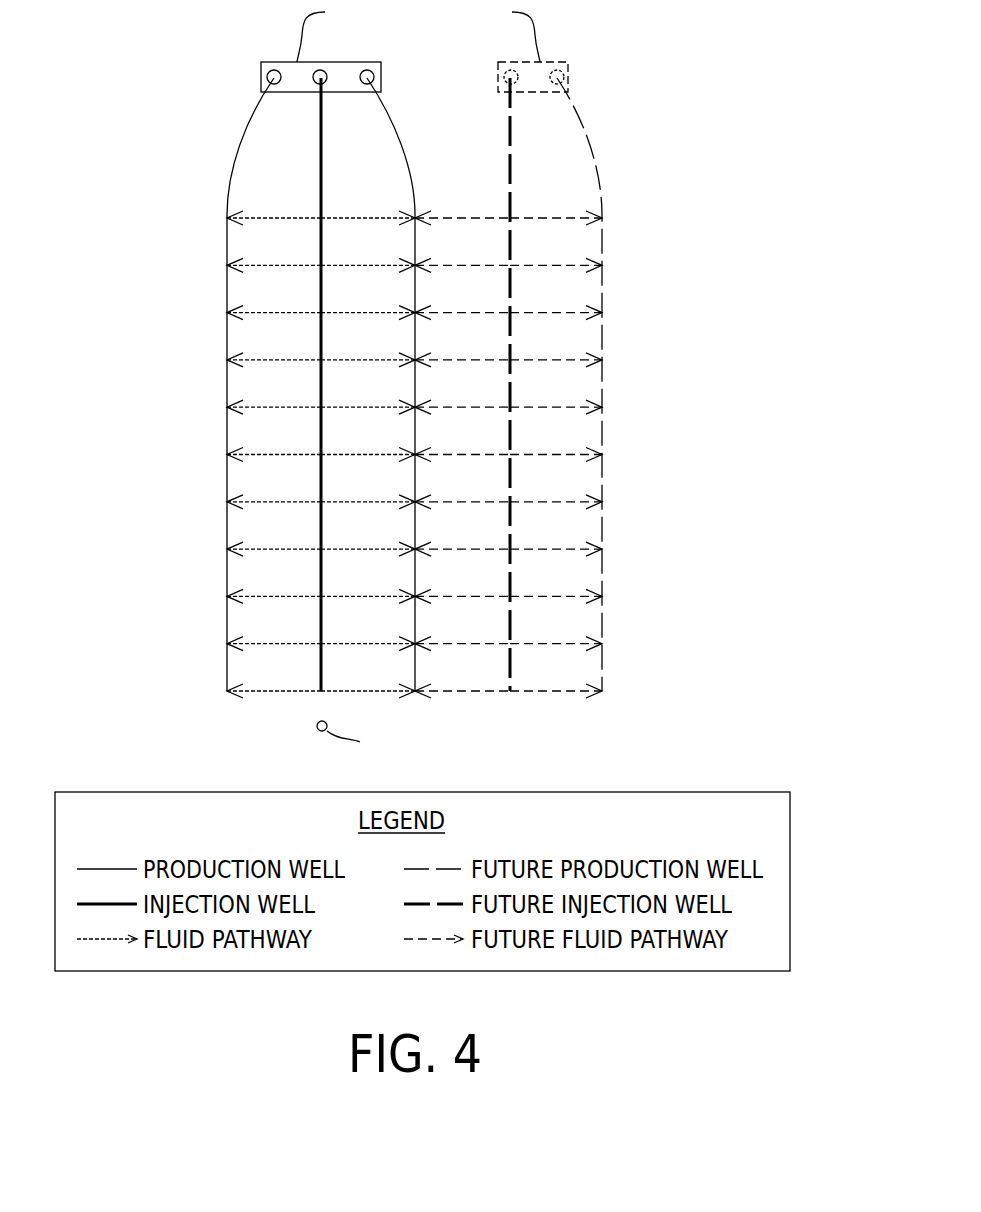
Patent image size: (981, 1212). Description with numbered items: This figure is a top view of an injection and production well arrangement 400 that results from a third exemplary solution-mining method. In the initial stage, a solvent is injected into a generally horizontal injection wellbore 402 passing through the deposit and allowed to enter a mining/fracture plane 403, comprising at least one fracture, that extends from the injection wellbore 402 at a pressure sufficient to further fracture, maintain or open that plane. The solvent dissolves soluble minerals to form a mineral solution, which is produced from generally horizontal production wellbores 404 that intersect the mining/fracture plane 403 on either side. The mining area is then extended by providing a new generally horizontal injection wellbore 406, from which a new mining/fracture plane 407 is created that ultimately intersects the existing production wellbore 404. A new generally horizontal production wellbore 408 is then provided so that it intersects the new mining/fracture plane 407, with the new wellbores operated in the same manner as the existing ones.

The injection and production well arrangement 400 is at (610, 72).
The horizontal injection wellbore 402 is at (322, 175).
The mining/fracture plane 403 is at (273, 216).
The horizontal production wellbore 404 is at (408, 136).
The new horizontal injection wellbore 406 is at (512, 192).
The new mining/fracture plane 407 is at (543, 453).
The new horizontal production wellbore 408 is at (603, 338).